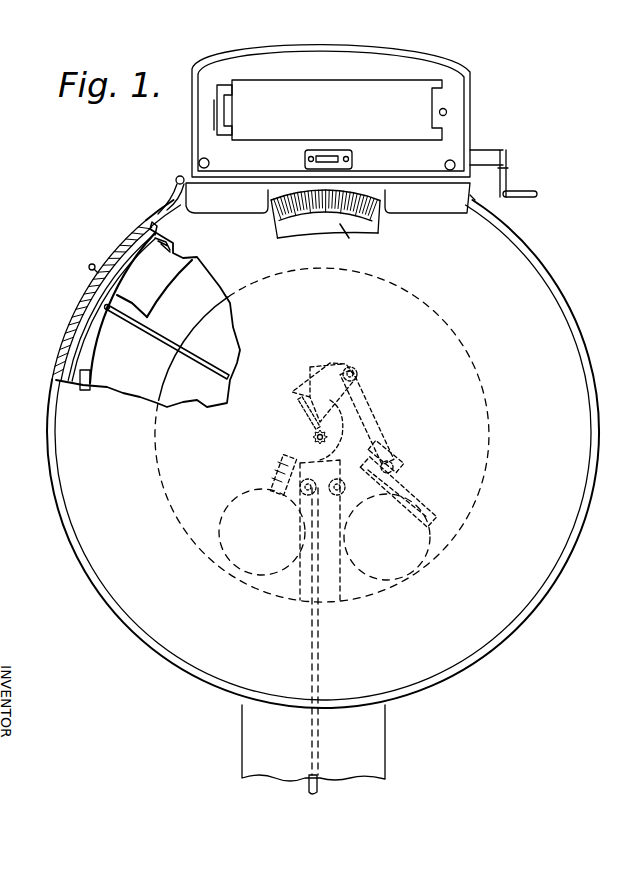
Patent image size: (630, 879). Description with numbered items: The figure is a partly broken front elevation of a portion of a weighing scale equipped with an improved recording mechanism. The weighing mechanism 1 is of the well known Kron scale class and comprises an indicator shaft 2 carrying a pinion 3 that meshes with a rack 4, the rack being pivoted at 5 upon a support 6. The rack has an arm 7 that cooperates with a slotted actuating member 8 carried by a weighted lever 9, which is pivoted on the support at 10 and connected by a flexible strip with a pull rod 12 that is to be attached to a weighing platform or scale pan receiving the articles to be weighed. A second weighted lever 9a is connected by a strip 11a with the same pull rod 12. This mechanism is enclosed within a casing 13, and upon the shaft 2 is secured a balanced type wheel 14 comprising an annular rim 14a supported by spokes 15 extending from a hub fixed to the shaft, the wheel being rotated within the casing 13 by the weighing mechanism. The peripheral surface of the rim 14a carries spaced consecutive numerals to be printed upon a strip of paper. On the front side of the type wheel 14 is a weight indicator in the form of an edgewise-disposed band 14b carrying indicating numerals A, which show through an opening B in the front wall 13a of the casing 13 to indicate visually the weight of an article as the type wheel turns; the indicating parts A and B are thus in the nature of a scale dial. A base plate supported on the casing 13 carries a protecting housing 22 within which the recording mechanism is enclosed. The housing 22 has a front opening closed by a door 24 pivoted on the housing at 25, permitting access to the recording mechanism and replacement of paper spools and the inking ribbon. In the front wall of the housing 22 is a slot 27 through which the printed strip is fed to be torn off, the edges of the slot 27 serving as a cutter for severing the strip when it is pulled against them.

The weighing mechanism 1 is at (393, 418).
The indicator shaft 2 is at (318, 440).
The pinion 3 is at (313, 428).
The rack 4 is at (313, 430).
The pivot 5 is at (358, 375).
The support 6 is at (323, 365).
The arm 7 is at (372, 443).
The slotted actuating member 8 is at (408, 474).
The weighted lever 9 is at (373, 537).
The second weighted lever 9a is at (282, 496).
The pivot 10 is at (336, 495).
The strip 11a is at (285, 456).
The pull rod 12 is at (300, 786).
The casing 13 is at (520, 633).
The front wall 13a is at (340, 435).
The balanced type wheel 14 is at (85, 372).
The annular rim 14a is at (78, 318).
The edgewise-disposed band 14b is at (141, 308).
The spokes 15 is at (143, 338).
The protecting casing or housing 22 is at (470, 108).
The door 24 is at (339, 110).
The pivot 25 is at (215, 128).
The slot 27 is at (352, 158).
The indicating numerals A is at (348, 241).
The opening B is at (381, 222).